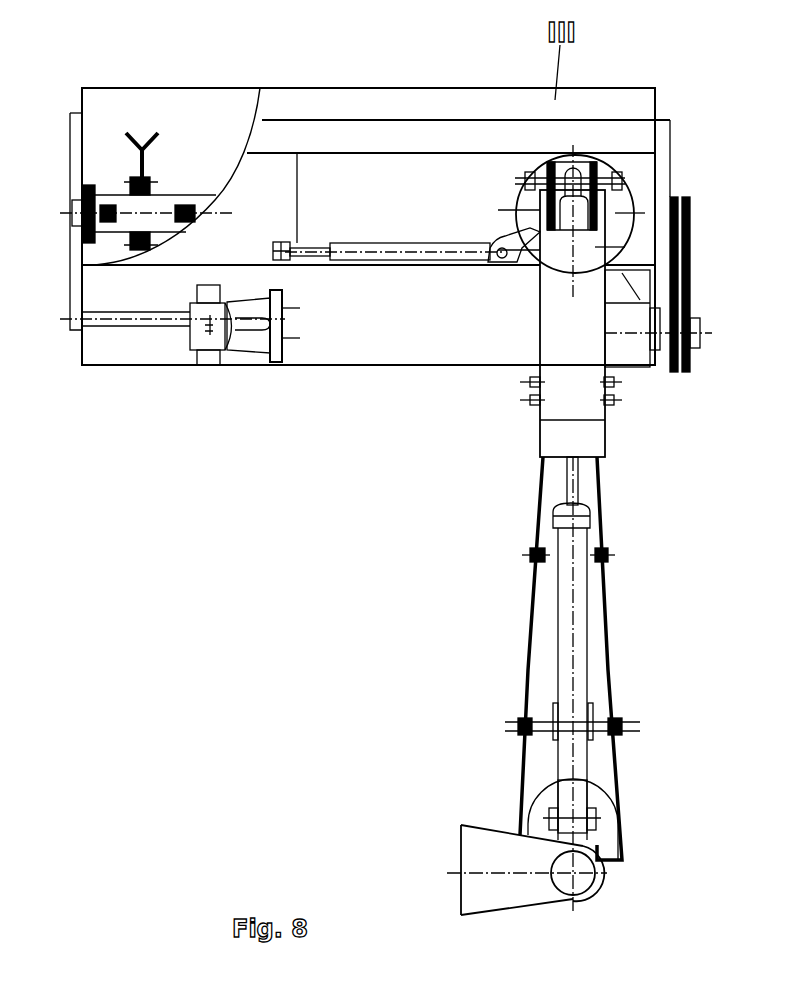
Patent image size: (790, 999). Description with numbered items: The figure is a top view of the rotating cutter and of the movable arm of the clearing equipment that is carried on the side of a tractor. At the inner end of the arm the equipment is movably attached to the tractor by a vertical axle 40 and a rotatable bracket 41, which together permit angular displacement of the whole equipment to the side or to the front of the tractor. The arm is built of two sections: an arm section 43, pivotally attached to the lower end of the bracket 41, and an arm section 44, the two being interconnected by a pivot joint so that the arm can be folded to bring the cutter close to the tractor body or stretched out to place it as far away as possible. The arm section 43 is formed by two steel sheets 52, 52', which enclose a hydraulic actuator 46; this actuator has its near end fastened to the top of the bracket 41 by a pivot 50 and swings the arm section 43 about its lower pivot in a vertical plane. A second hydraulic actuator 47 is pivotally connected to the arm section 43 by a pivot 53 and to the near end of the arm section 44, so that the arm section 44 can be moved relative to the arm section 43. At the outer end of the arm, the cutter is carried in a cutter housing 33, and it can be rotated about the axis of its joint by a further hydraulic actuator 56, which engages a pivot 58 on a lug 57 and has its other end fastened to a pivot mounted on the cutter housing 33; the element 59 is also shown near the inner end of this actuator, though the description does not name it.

The cutter housing 33 is at (648, 105).
The vertical axle 40 is at (583, 878).
The rotatable bracket 41 is at (600, 838).
The arm section 43 is at (587, 488).
The arm section 44 is at (557, 405).
The hydraulic actuator 46 is at (577, 796).
The hydraulic actuator 47 is at (568, 572).
The pivot 50 is at (547, 820).
The steel sheet 52 is at (506, 646).
The steel sheet 52' is at (646, 658).
The pivot 53 is at (640, 725).
The hydraulic actuator 56 is at (373, 243).
The lug 57 is at (513, 237).
The pivot 58 is at (500, 248).
The bracket 59 is at (280, 245).